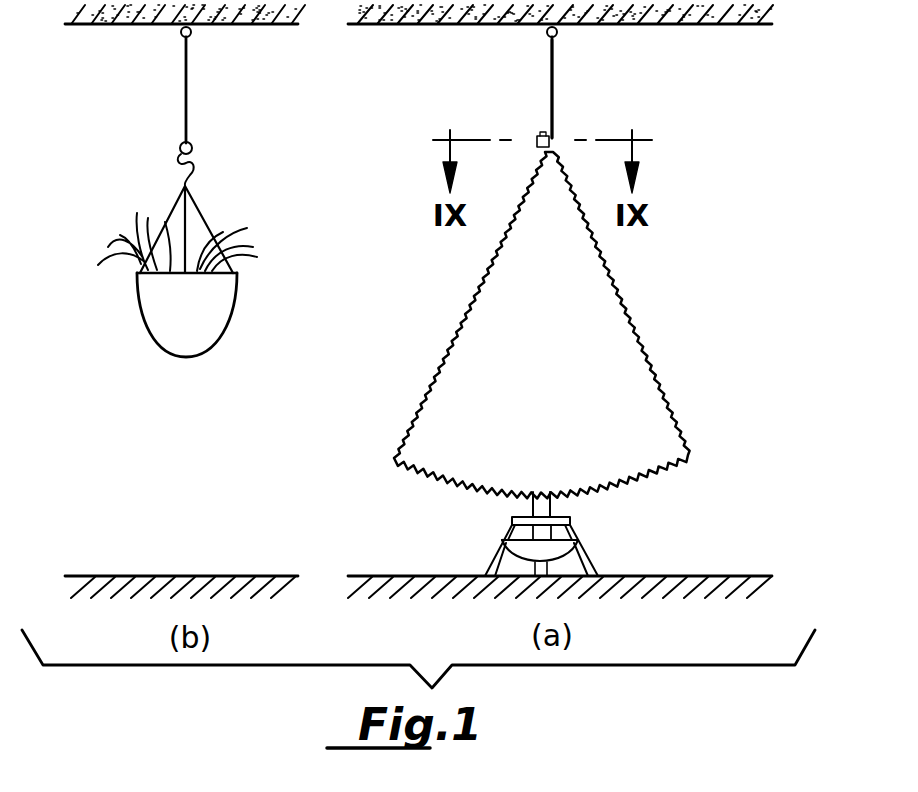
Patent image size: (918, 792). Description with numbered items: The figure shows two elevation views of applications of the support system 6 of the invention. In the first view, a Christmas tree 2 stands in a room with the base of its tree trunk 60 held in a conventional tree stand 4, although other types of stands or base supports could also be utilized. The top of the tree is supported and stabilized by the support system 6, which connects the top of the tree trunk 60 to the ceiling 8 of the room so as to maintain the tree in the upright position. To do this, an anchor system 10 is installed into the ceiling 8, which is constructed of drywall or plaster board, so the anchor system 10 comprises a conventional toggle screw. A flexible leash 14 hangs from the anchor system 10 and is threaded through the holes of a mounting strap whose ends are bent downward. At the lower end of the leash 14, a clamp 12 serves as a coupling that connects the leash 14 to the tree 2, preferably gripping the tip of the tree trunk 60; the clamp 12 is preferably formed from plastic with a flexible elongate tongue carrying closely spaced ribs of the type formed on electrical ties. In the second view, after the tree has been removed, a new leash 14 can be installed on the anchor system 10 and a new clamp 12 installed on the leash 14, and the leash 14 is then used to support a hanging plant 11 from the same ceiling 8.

The Christmas tree 2 is at (655, 378).
The tree stand 4 is at (598, 562).
The support system 6 is at (553, 78).
The ceiling 8 is at (735, 16).
The anchor system 10 is at (182, 36).
The hanging plant 11 is at (215, 318).
The clamp 12 is at (192, 143).
The flexible leash 14 is at (188, 102).
The tree trunk 60 is at (552, 505).